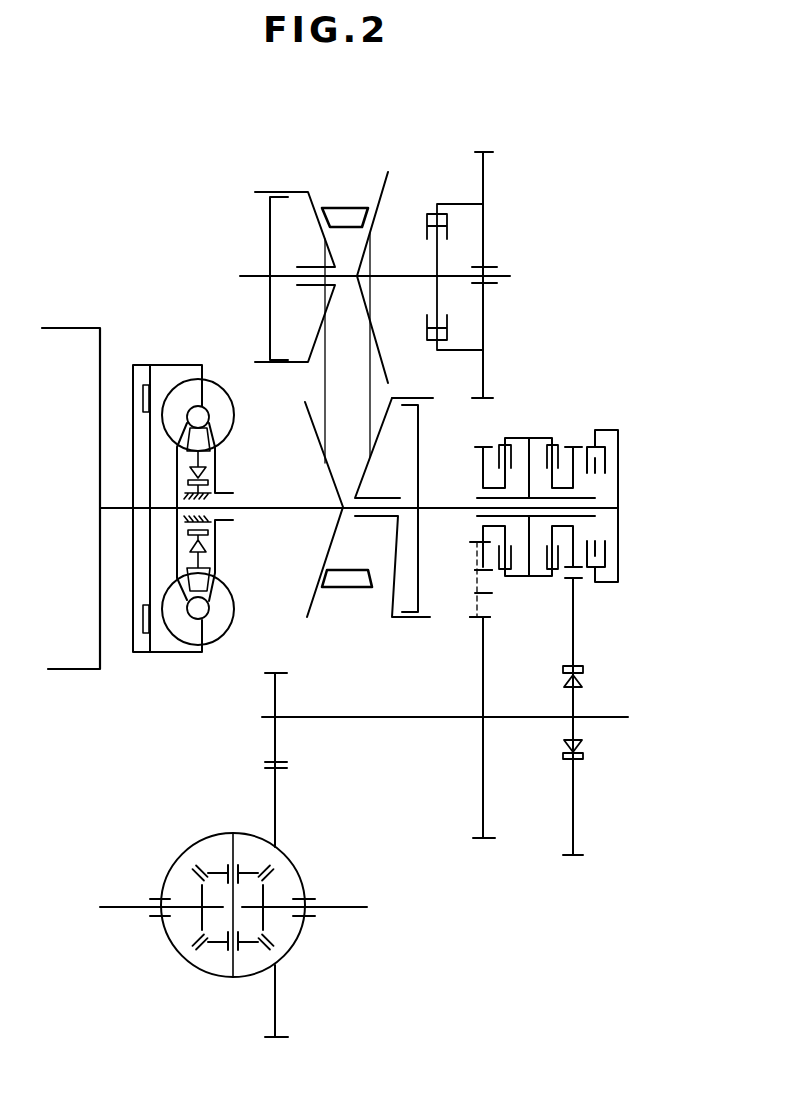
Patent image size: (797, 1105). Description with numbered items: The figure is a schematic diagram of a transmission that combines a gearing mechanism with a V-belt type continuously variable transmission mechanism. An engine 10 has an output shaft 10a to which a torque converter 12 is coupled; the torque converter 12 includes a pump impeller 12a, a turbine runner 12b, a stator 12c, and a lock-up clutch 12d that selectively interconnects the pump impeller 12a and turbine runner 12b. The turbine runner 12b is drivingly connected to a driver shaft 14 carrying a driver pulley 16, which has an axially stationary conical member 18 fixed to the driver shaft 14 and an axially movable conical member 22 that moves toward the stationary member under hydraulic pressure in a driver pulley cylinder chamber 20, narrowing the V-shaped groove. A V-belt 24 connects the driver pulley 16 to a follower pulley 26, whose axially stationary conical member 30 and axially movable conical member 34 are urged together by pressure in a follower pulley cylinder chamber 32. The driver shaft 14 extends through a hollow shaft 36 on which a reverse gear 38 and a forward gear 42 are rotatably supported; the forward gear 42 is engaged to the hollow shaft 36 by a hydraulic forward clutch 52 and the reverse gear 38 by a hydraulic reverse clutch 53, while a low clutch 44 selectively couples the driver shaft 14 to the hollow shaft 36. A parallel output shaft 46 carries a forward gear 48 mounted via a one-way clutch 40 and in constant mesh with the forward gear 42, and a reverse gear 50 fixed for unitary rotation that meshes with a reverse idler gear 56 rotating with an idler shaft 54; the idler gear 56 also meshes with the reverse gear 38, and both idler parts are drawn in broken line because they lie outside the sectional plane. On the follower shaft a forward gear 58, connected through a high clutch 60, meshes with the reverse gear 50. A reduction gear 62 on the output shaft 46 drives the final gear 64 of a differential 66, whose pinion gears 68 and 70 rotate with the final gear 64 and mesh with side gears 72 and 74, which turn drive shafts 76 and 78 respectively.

The engine 10 is at (76, 340).
The output shaft 10a is at (116, 509).
The torque converter 12 is at (205, 361).
The pump impeller 12a is at (232, 405).
The turbine runner 12b is at (176, 398).
The stator 12c is at (200, 443).
The lock-up clutch 12d is at (141, 392).
The driver shaft 14 is at (297, 506).
The driver pulley 16 is at (350, 592).
The axially stationary conical member 18 is at (313, 613).
The driver pulley cylinder chamber 20 is at (405, 571).
The axially movable conical member 22 is at (386, 617).
The V-belt 24 is at (372, 398).
The follower pulley 26 is at (358, 196).
The axially stationary conical member 30 is at (383, 175).
The follower pulley cylinder chamber 32 is at (281, 233).
The axially movable conical member 34 is at (311, 196).
The hollow shaft 36 is at (480, 496).
The reverse gear on the driver shaft side 38 is at (477, 444).
The one-way clutch 40 is at (583, 748).
The forward gear on the driver shaft side 42 is at (577, 445).
The low clutch 44 is at (612, 443).
The output shaft 46 is at (403, 716).
The forward gear on the output shaft side 48 is at (577, 858).
The reverse gear 50 is at (490, 840).
The hydraulic forward clutch 52 is at (562, 440).
The hydraulic reverse clutch 53 is at (498, 438).
The idler shaft 54 is at (447, 580).
The reverse idler gear 56 is at (472, 620).
The forward gear 58 is at (492, 150).
The high clutch 60 is at (428, 211).
The reduction gear 62 is at (272, 672).
The final gear 64 is at (283, 769).
The differential 66 is at (225, 832).
The pinion gear 68 is at (251, 872).
The pinion gear 70 is at (247, 943).
The side gear 72 is at (200, 925).
The side gear 74 is at (265, 918).
The drive shaft 76 is at (117, 906).
The drive shaft 78 is at (343, 906).